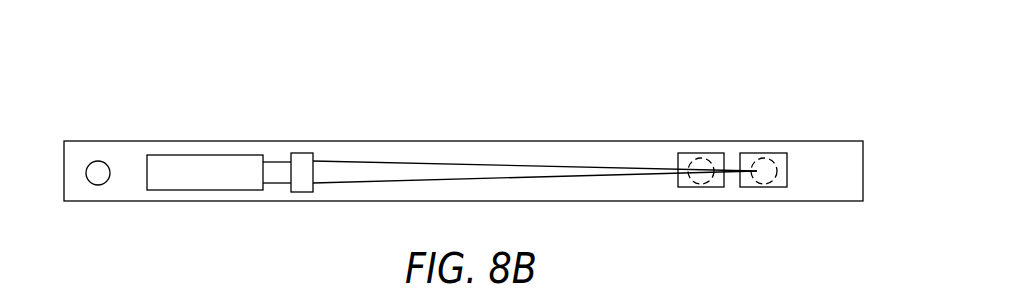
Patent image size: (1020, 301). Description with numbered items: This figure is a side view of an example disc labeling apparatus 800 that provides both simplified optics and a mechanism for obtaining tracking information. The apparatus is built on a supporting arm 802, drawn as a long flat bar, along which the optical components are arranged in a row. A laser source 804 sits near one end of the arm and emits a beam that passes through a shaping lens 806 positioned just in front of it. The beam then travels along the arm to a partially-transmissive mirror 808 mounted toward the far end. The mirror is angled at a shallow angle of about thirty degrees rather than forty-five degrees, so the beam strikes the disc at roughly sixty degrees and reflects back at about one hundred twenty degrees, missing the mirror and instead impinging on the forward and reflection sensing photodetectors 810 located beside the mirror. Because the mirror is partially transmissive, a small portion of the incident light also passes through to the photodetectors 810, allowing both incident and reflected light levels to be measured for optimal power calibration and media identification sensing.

The disc labeling apparatus 800 is at (262, 70).
The supporting arm 802 is at (100, 141).
The laser source 804 is at (205, 155).
The shaping lens 806 is at (302, 153).
The partially-transmissive mirror 808 is at (692, 136).
The forward and reflection sensing photodetectors 810 is at (755, 136).